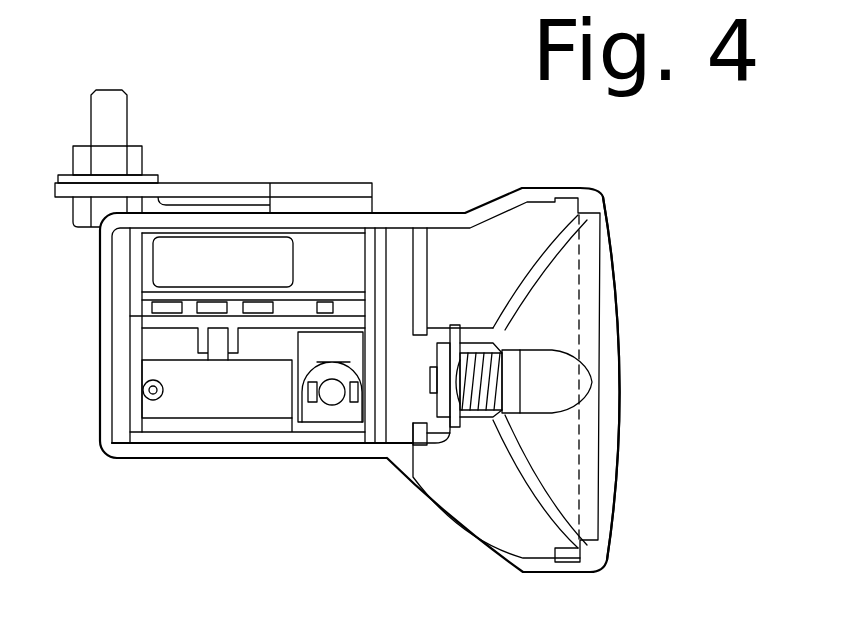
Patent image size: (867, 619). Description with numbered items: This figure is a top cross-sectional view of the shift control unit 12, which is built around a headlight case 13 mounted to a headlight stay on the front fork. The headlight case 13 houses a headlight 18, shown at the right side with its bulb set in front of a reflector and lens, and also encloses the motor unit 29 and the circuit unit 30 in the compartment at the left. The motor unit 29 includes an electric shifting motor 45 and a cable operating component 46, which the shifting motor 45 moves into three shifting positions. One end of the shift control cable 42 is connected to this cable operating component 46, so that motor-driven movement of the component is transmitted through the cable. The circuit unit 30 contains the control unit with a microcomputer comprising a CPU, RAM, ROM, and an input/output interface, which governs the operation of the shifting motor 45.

The shift control unit 12 is at (397, 167).
The headlight case 13 is at (410, 213).
The headlight 18 is at (543, 368).
The motor unit 29 is at (248, 435).
The circuit unit 30 is at (240, 255).
The shift control cable 42 is at (113, 127).
The shifting motor 45 is at (310, 418).
The cable operating component 46 is at (202, 402).